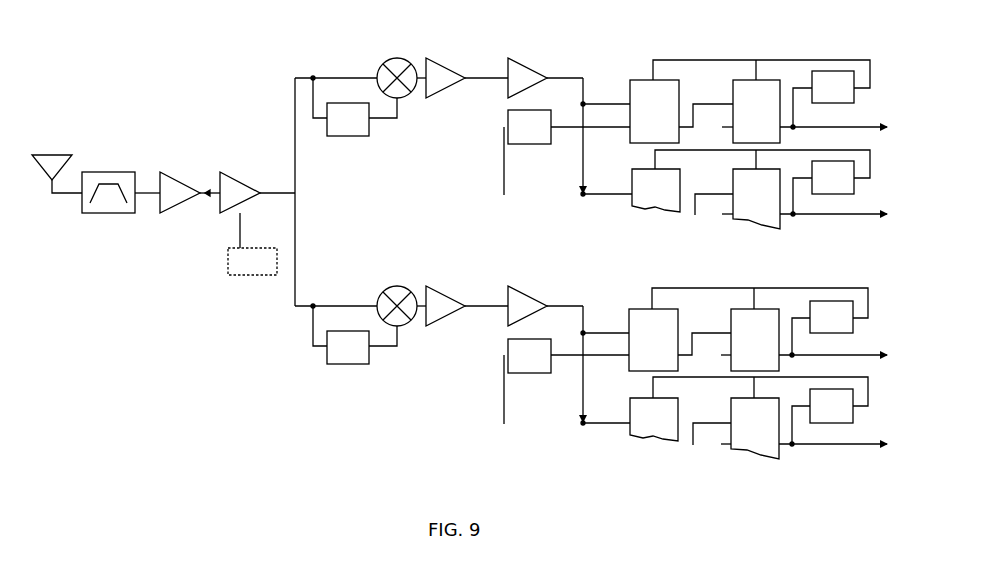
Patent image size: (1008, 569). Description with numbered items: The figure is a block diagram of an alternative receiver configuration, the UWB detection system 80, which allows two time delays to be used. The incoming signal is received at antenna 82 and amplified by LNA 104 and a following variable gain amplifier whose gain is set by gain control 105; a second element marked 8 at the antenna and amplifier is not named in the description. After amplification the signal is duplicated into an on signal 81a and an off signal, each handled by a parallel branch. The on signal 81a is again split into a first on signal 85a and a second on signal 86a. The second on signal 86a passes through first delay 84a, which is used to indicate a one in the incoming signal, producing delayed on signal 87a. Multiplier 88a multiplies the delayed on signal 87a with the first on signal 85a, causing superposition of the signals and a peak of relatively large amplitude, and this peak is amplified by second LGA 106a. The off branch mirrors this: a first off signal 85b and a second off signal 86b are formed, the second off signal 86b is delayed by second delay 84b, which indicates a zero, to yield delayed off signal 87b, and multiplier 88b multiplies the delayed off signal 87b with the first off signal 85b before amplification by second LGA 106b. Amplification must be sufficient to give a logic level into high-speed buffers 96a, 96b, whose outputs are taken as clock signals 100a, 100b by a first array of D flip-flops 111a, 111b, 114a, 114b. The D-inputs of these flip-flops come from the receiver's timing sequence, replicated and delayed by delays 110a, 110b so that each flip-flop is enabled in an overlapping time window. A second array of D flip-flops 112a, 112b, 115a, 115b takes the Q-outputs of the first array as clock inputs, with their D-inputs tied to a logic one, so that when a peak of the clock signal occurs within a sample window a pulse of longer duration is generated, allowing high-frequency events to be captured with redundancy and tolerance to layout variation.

The UWB detection system 80 is at (123, 60).
The antenna / amplifier 8 is at (50, 152).
The antenna 82 is at (100, 172).
The LNA 104 is at (177, 171).
The gain control 105 is at (237, 275).
The on signal 81a is at (293, 90).
The first on signal 85a is at (335, 77).
The second on signal 86a is at (313, 120).
The first delay 84a is at (347, 137).
The delayed on signal 87a is at (397, 120).
The multiplier 88a is at (397, 58).
The second LGA 106a is at (448, 63).
The high-speed buffer 96a is at (530, 63).
The clock signal 100a is at (583, 78).
The delay 110a is at (530, 144).
The D flip-flop 111a is at (630, 93).
The D flip-flop 111b is at (655, 213).
The D flip-flop 112a is at (731, 92).
The D flip-flop 112b is at (757, 230).
The first off signal 85b is at (332, 305).
The second off signal 86b is at (313, 348).
The second delay 84b is at (347, 365).
The delayed off signal 87b is at (397, 348).
The multiplier 88b is at (394, 286).
The second LGA 106b is at (445, 291).
The high-speed buffer 96b is at (528, 291).
The clock signal 100b is at (583, 306).
The delay 110b is at (530, 373).
The D flip-flop 114a is at (629, 322).
The D flip-flop 114b is at (655, 442).
The D flip-flop 115a is at (728, 322).
The D flip-flop 115b is at (757, 460).